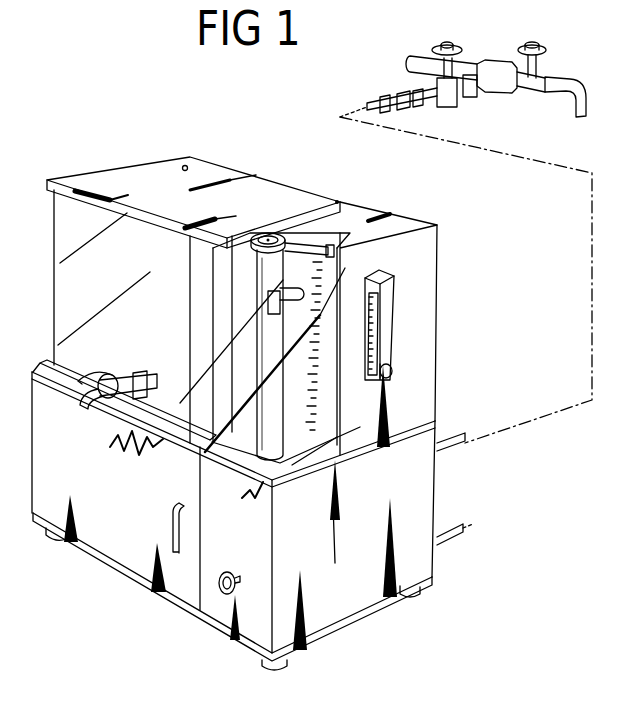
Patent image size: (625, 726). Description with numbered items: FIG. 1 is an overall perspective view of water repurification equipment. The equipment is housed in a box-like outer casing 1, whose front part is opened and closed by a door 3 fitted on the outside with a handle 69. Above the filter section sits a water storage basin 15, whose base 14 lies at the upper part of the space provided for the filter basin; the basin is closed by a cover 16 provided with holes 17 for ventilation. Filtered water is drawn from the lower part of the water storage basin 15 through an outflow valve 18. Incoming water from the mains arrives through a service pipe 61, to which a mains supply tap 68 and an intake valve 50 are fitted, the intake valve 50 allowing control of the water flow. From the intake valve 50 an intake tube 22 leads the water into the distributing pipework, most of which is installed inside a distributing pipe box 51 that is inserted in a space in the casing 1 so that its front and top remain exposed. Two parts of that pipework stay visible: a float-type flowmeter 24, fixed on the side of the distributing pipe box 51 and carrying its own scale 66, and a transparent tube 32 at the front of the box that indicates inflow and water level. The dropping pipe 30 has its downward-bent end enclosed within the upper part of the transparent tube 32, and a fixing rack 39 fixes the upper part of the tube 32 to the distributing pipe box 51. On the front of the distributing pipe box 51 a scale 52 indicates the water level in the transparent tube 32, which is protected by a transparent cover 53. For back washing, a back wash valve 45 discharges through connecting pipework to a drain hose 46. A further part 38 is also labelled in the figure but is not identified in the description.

The outer casing 1 is at (367, 624).
The door 3 is at (113, 548).
The base of the water storage basin 14 is at (52, 362).
The water storage basin 15 is at (66, 272).
The cover 16 is at (247, 181).
The holes 17 is at (337, 199).
The outflow valve 18 is at (87, 410).
The intake tube 22 is at (368, 106).
The float-type flowmeter 24 is at (392, 306).
The dropping pipe 30 is at (270, 292).
The transparent tube 32 is at (258, 360).
The cap 38 is at (268, 236).
The fixing rack 39 is at (322, 246).
The back wash valve 45 is at (221, 596).
The drain hose 46 is at (450, 540).
The intake valve 50 is at (450, 108).
The distributing pipe box 51 is at (437, 305).
The scale 52 is at (318, 398).
The transparent cover 53 is at (292, 465).
The service pipe 61 is at (413, 54).
The scale of the float-type flowmeter 66 is at (380, 340).
The mains supply tap 68 is at (566, 77).
The handle 69 is at (172, 528).